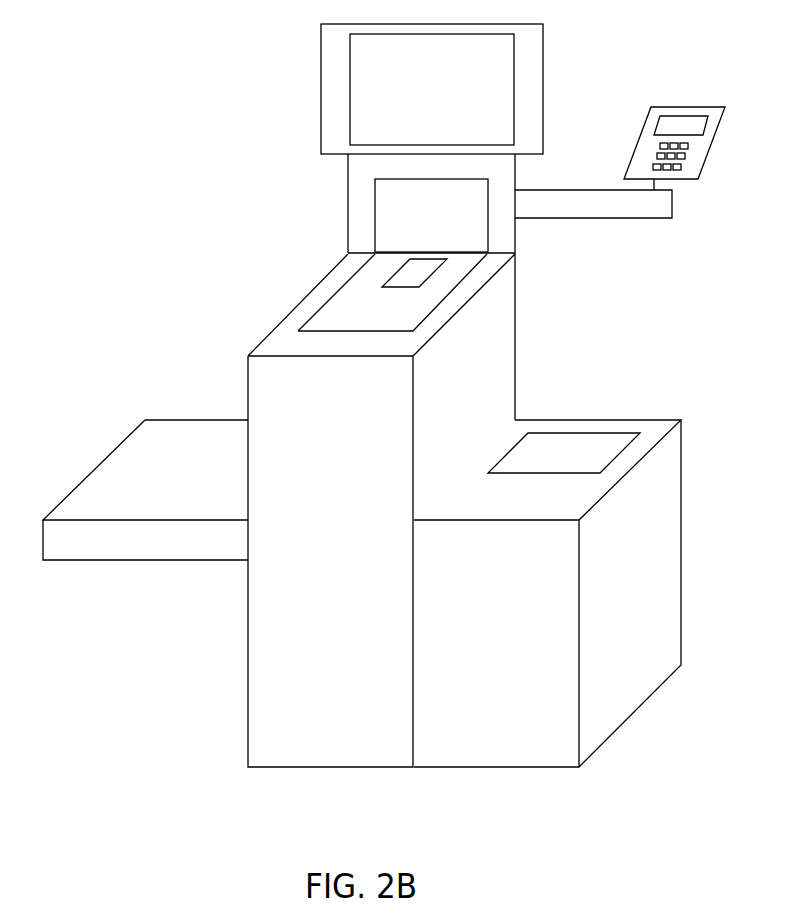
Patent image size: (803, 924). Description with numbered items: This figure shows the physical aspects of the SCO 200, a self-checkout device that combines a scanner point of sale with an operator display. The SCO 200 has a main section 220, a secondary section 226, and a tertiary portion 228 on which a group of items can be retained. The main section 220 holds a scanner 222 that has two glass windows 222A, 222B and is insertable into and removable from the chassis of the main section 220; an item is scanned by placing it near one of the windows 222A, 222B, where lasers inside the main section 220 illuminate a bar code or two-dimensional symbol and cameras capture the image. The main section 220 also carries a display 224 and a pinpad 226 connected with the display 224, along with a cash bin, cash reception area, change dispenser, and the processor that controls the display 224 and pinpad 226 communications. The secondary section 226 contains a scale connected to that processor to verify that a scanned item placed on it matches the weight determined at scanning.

The self-checkout device 200 is at (156, 40).
The main section 220 is at (320, 748).
The scanner 222 is at (338, 310).
The window 222A is at (412, 273).
The window 222B is at (473, 227).
The display 224 is at (321, 88).
The secondary section 226 is at (640, 143).
The tertiary portion 228 is at (125, 468).